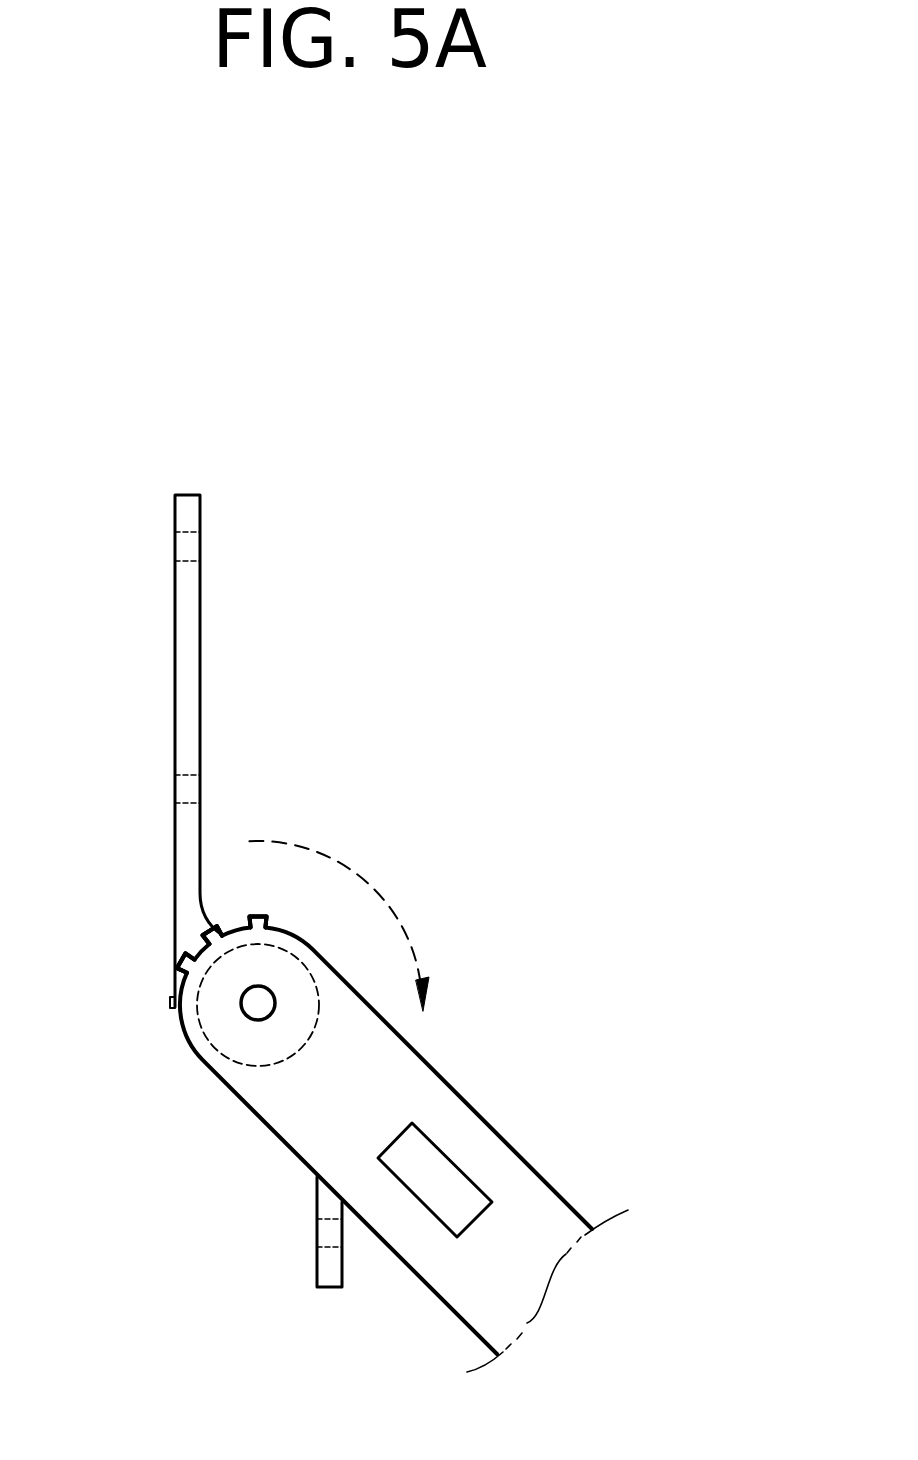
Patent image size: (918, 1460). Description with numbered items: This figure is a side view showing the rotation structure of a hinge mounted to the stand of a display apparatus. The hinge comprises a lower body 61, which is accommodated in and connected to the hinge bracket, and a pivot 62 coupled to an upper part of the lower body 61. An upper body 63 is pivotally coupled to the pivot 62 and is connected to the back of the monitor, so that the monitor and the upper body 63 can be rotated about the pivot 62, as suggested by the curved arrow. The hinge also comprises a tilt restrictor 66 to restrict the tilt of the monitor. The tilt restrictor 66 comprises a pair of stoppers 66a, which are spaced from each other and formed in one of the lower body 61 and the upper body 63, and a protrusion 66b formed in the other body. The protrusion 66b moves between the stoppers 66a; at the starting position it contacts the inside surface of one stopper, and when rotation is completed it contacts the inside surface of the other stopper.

The lower body 61 is at (317, 1180).
The pivot 62 is at (260, 1018).
The upper body 63 is at (177, 632).
The tilt restrictor 66 is at (428, 763).
The stoppers 66a is at (184, 950).
The protrusion 66b is at (214, 927).